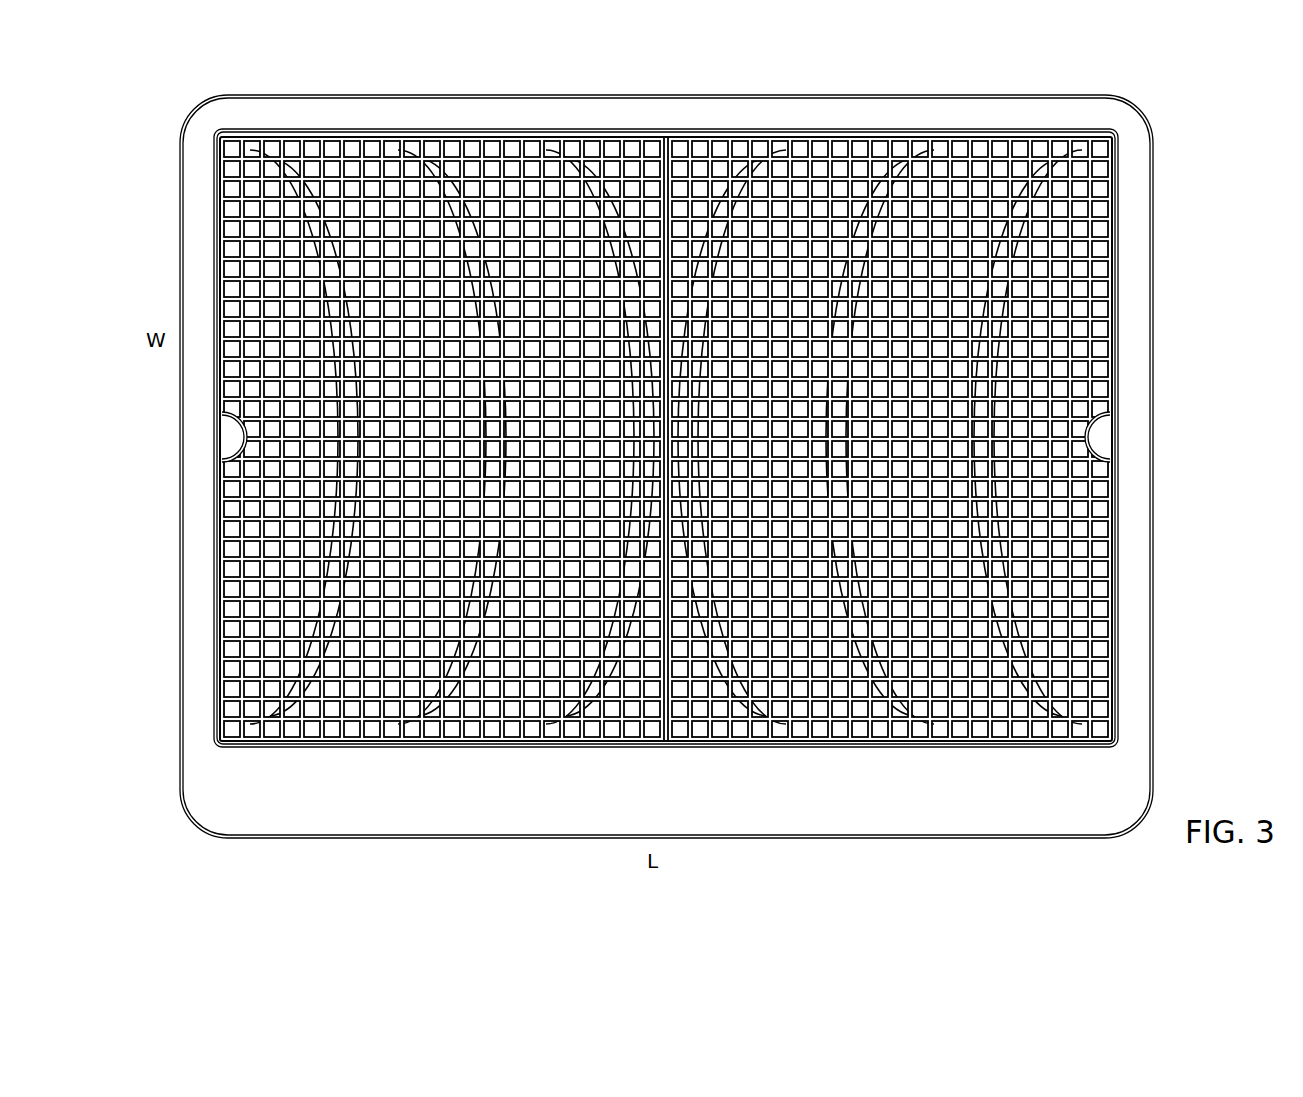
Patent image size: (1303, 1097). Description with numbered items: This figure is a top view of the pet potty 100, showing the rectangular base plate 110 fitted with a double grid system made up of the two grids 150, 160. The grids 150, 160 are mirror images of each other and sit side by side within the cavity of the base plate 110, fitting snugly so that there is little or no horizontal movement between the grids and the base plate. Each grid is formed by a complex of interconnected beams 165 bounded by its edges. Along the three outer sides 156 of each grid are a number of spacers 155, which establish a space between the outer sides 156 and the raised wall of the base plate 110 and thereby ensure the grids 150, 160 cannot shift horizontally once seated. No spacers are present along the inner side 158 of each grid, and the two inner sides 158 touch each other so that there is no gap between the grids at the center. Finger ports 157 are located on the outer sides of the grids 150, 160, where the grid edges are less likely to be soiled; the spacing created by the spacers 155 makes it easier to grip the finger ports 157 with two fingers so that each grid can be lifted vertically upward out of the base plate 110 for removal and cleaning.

The pet potty 100 is at (632, 64).
The base plate 110 is at (718, 94).
The grid 150 is at (668, 466).
The spacers 155 is at (302, 134).
The outer sides 156 is at (374, 136).
The finger ports 157 is at (246, 438).
The inner side 158 is at (668, 136).
The grid 160 is at (442, 136).
The beams 165 is at (262, 510).